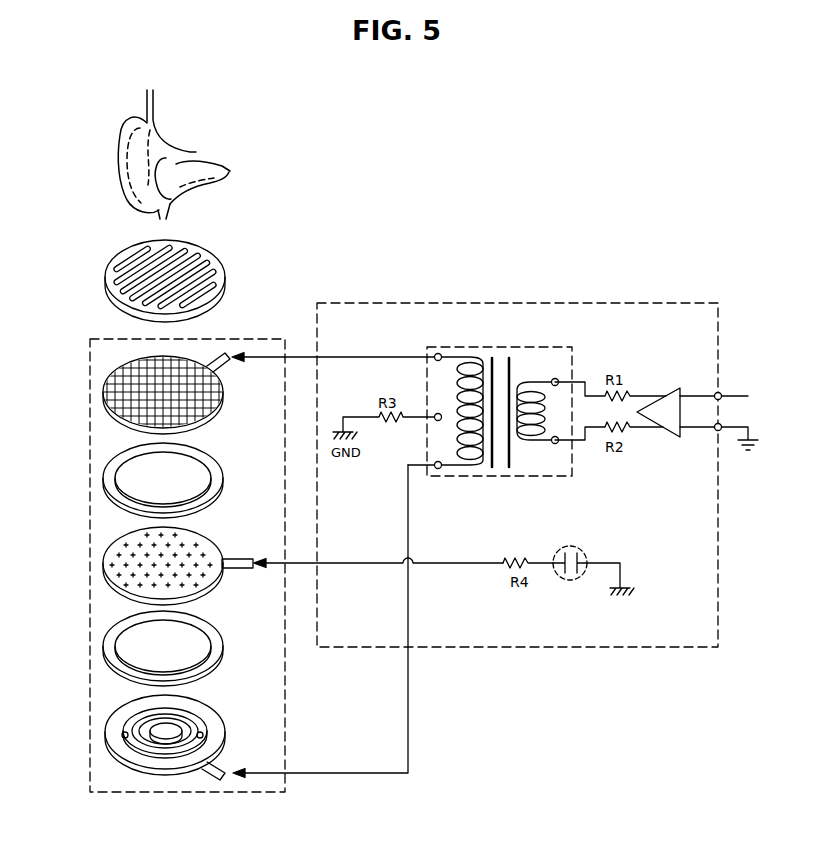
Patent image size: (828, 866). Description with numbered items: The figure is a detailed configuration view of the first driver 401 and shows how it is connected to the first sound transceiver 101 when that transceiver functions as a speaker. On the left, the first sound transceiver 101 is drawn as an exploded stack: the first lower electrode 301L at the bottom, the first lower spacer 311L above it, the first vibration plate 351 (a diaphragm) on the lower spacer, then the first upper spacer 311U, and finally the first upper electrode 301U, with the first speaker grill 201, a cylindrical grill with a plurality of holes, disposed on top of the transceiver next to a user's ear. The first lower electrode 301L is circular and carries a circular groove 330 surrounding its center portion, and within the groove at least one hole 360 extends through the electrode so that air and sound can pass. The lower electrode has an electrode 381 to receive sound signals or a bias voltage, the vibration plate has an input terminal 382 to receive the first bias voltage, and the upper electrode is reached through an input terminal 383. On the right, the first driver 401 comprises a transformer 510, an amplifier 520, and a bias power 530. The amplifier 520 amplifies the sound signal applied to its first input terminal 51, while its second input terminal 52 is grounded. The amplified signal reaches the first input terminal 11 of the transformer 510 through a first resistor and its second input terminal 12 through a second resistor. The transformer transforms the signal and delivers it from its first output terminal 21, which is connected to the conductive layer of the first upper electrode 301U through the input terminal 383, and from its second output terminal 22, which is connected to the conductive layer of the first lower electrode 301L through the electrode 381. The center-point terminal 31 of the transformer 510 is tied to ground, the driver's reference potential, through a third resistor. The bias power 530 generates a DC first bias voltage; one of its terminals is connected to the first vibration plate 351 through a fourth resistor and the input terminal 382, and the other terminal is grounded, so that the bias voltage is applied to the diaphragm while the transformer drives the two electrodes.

The first sound transceiver 101 is at (185, 792).
The first speaker grill 201 is at (108, 272).
The first upper electrode 301U is at (110, 386).
The first upper spacer 311U is at (108, 477).
The first vibration plate 351 is at (108, 562).
The first lower spacer 311L is at (108, 645).
The first lower electrode 301L is at (112, 722).
The groove 330 is at (122, 714).
The hole 360 is at (121, 716).
The electrode 381 is at (220, 762).
The input terminal 382 is at (234, 558).
The input terminal 383 is at (224, 350).
The first driver 401 is at (538, 303).
The transformer 510 is at (500, 347).
The first output terminal 21 is at (438, 353).
The second output terminal 22 is at (438, 469).
The center-point terminal 31 is at (436, 413).
The first input terminal 11 is at (559, 380).
The second input terminal 12 is at (555, 444).
The amplifier 520 is at (672, 392).
The first input terminal 51 is at (718, 392).
The second input terminal 52 is at (718, 431).
The bias power 530 is at (570, 546).